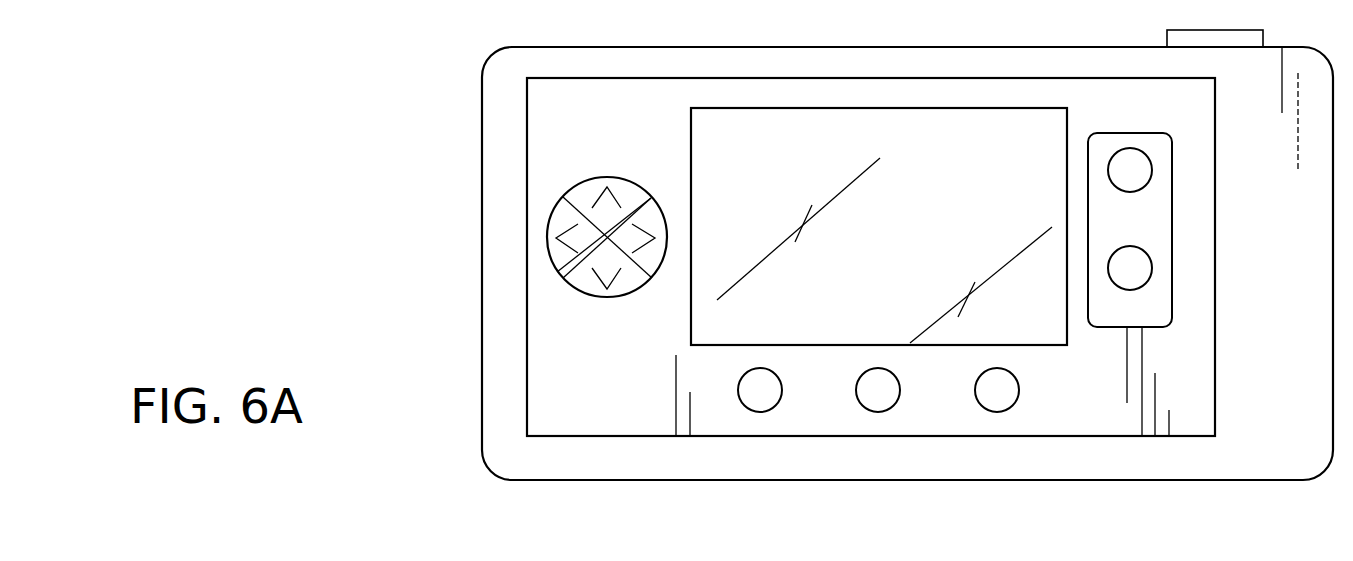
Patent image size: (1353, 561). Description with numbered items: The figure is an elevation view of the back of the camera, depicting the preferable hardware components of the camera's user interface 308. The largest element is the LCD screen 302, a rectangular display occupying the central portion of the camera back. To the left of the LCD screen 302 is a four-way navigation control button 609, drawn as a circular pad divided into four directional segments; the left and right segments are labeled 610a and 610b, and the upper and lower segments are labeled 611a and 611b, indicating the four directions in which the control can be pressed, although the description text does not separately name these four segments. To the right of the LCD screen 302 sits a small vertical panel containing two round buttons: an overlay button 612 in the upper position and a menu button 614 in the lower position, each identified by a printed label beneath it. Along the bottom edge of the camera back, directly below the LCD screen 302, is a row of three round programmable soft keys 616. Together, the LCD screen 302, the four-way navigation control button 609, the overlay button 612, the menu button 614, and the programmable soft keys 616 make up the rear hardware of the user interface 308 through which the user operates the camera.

The user interface 308 is at (388, 70).
The LCD screen 302 is at (908, 243).
The four-way navigation control button 609 is at (567, 163).
The left direction button 610a is at (557, 213).
The right direction button 610b is at (558, 267).
The up direction button 611a is at (627, 190).
The down direction button 611b is at (625, 287).
The overlay button 612 is at (1153, 172).
The menu button 614 is at (1153, 270).
The programmable soft keys 616 is at (998, 412).